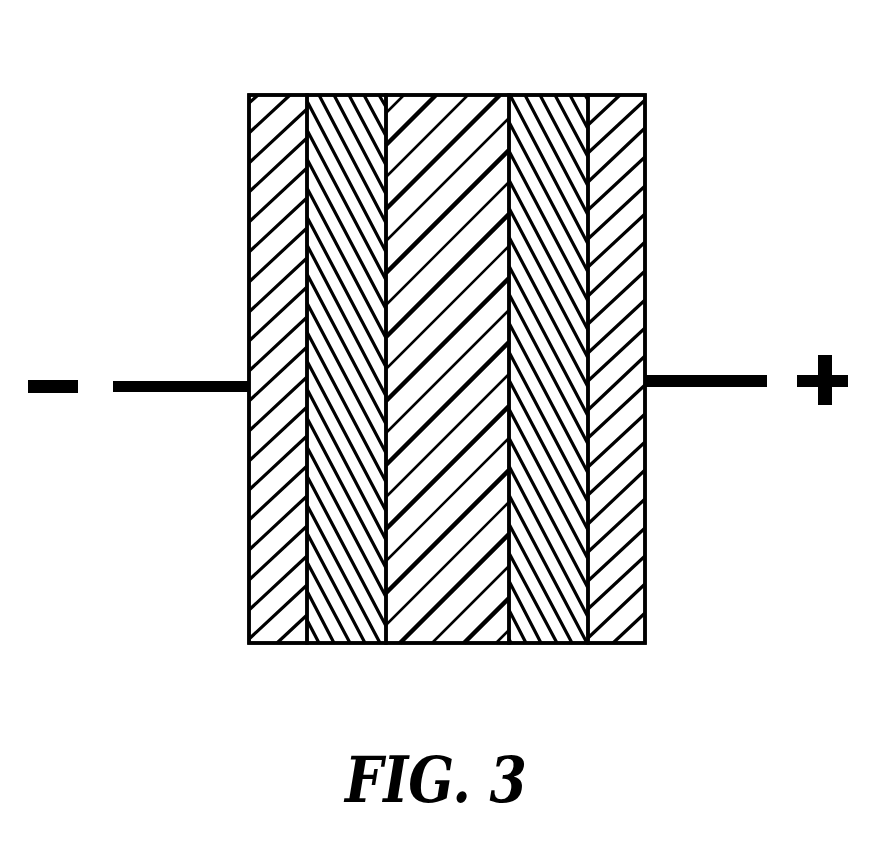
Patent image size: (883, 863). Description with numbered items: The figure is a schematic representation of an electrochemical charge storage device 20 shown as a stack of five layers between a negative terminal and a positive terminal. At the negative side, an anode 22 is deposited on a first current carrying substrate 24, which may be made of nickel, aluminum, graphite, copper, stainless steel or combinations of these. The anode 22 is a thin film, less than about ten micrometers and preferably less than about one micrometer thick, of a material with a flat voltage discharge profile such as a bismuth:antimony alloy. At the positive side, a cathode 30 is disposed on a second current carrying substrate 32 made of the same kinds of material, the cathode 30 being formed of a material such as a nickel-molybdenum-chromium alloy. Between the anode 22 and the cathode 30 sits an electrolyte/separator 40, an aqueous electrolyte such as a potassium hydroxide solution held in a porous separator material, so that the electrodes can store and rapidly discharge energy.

The electrochemical charge storage device 20 is at (832, 642).
The first current carrying substrate 24 is at (272, 92).
The anode 22 is at (335, 92).
The electrolyte/separator 40 is at (453, 92).
The cathode 30 is at (545, 92).
The second current carrying substrate 32 is at (617, 92).